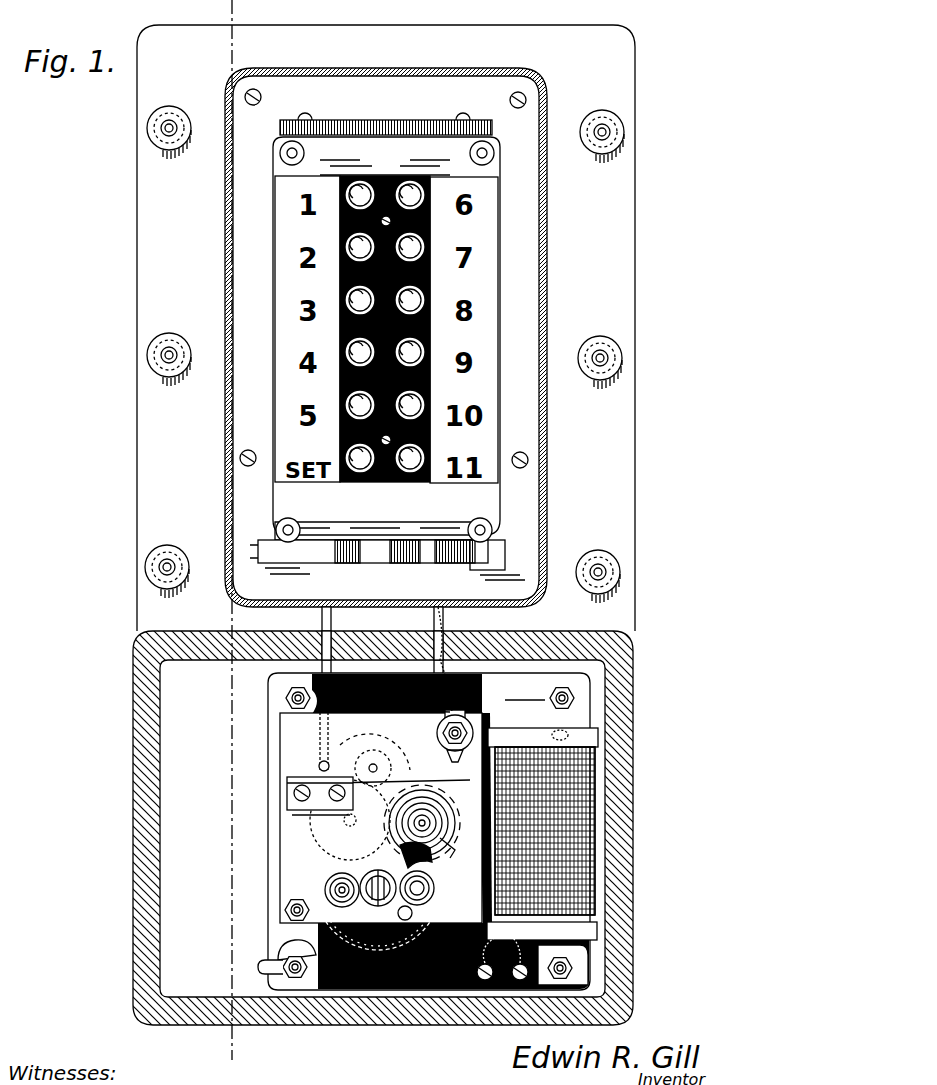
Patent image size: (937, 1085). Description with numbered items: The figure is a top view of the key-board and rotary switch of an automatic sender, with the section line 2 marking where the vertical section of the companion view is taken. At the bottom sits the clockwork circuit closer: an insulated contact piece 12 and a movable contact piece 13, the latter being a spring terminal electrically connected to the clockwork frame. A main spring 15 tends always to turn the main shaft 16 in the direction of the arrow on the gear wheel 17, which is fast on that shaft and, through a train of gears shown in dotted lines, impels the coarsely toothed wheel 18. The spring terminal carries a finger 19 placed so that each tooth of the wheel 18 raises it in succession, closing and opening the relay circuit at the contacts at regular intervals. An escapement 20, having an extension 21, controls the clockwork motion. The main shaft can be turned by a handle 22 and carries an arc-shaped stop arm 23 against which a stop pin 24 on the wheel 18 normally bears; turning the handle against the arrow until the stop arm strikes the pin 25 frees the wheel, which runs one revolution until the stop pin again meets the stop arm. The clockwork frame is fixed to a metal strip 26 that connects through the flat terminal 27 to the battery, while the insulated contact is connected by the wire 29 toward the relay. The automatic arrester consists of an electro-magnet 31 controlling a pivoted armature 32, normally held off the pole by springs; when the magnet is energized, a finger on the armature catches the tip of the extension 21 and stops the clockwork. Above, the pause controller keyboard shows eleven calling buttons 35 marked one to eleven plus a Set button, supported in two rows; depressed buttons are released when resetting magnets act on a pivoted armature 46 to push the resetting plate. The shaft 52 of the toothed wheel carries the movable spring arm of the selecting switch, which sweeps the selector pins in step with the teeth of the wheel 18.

The section line 2— 2 is at (206, 5).
The insulated contact piece 12 is at (438, 728).
The movable contact piece 13 is at (412, 788).
The main spring 15 is at (410, 913).
The main shaft 16 is at (357, 872).
The gear wheel 17 is at (340, 882).
The coarsely toothed wheel 18 is at (385, 820).
The finger 19 is at (428, 803).
The escapement 20 is at (316, 752).
The extension 21 is at (327, 712).
The handle 22 is at (342, 892).
The arc-shaped stop arm 23 is at (442, 864).
The stop pin 24 is at (440, 855).
The pin 25 is at (330, 915).
The metal strip 26 is at (276, 819).
The flat terminal 27 is at (272, 962).
The wire 29 is at (415, 624).
The electro-magnet 31 is at (575, 785).
The pivoted armature 32 is at (522, 712).
The buttons 35 is at (345, 348).
The pivoted armature 46 is at (375, 555).
The shaft 52 is at (392, 838).